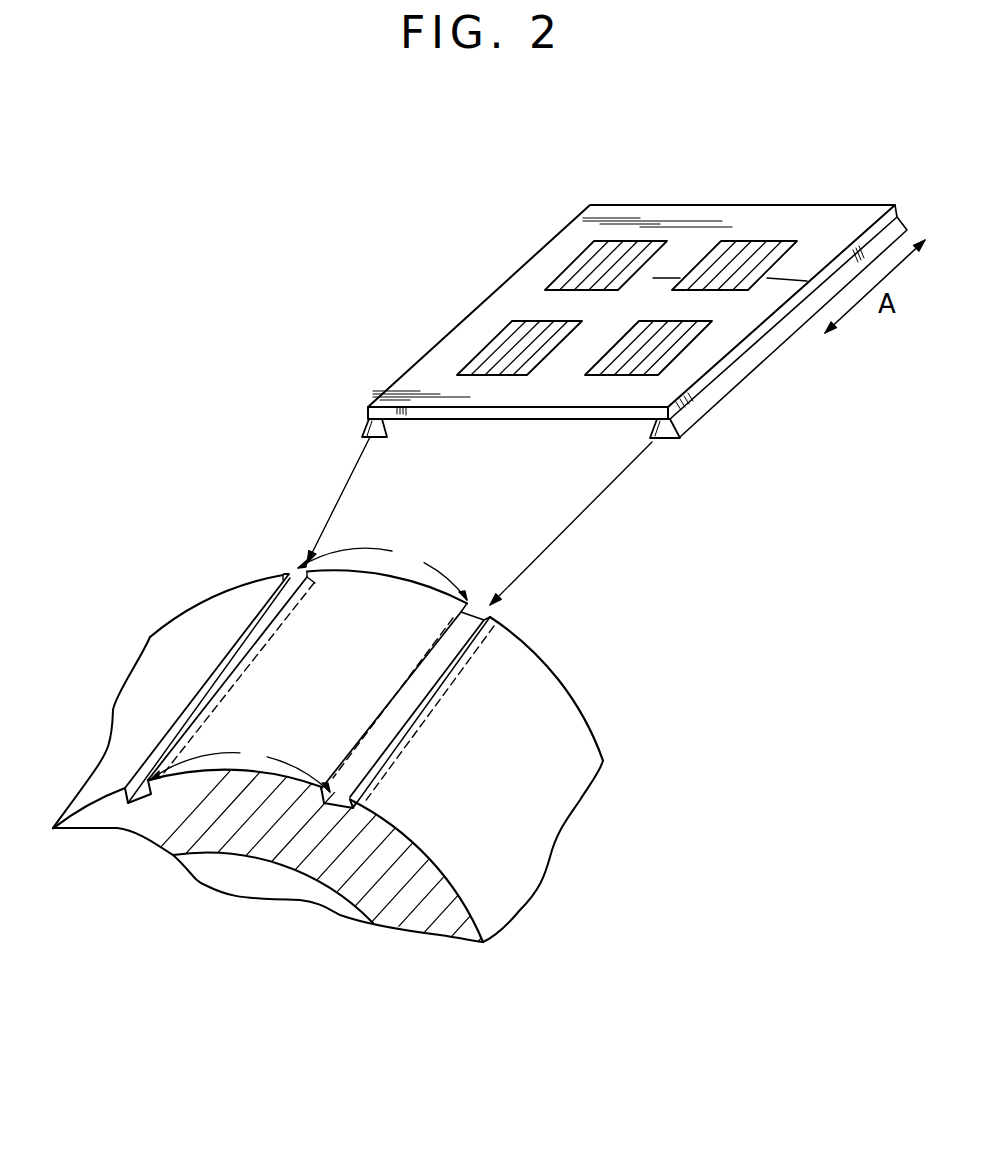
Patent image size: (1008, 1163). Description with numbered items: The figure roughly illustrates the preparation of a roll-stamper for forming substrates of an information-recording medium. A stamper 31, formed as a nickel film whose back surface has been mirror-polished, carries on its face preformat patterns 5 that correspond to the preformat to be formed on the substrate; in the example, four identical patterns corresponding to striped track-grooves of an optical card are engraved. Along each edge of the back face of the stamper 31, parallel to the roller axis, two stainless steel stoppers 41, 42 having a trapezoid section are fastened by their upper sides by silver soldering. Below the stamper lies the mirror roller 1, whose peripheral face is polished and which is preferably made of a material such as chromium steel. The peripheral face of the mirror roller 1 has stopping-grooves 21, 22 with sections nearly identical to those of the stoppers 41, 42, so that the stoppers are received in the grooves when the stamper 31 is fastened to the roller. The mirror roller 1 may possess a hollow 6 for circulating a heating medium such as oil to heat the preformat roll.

The mirror roller 1 is at (596, 726).
The preformat pattern 5 is at (608, 248).
The hollow 6 is at (262, 882).
The stopping-groove 21 is at (128, 803).
The stopping-groove 22 is at (337, 808).
The stamper 31 is at (690, 213).
The stopper 41 is at (370, 434).
The stopper 42 is at (692, 417).